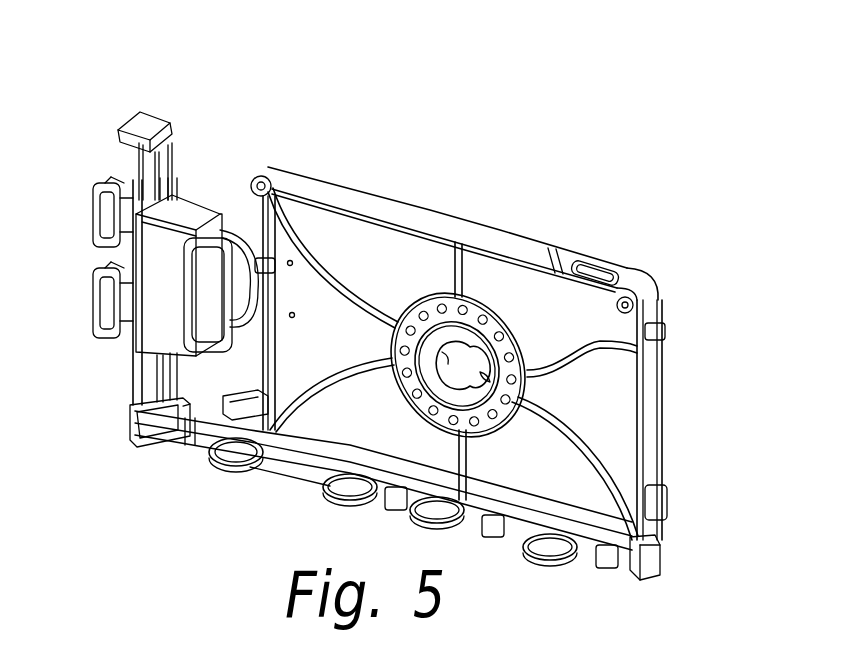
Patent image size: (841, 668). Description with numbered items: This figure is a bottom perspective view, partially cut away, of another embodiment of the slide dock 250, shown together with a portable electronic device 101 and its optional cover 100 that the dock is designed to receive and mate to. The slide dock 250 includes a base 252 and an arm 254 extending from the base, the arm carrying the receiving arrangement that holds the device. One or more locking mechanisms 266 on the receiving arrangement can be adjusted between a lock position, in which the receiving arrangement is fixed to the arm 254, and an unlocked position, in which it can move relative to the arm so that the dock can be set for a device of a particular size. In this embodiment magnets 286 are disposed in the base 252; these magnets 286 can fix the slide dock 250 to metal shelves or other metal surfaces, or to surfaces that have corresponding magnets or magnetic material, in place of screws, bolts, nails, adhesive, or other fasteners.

The slide dock 250 is at (240, 76).
The arm 254 is at (132, 122).
The locking mechanism 266 is at (95, 225).
The cover 100 is at (386, 200).
The portable electronic device 101 is at (627, 268).
The base 252 is at (650, 563).
The magnets 286 is at (213, 462).